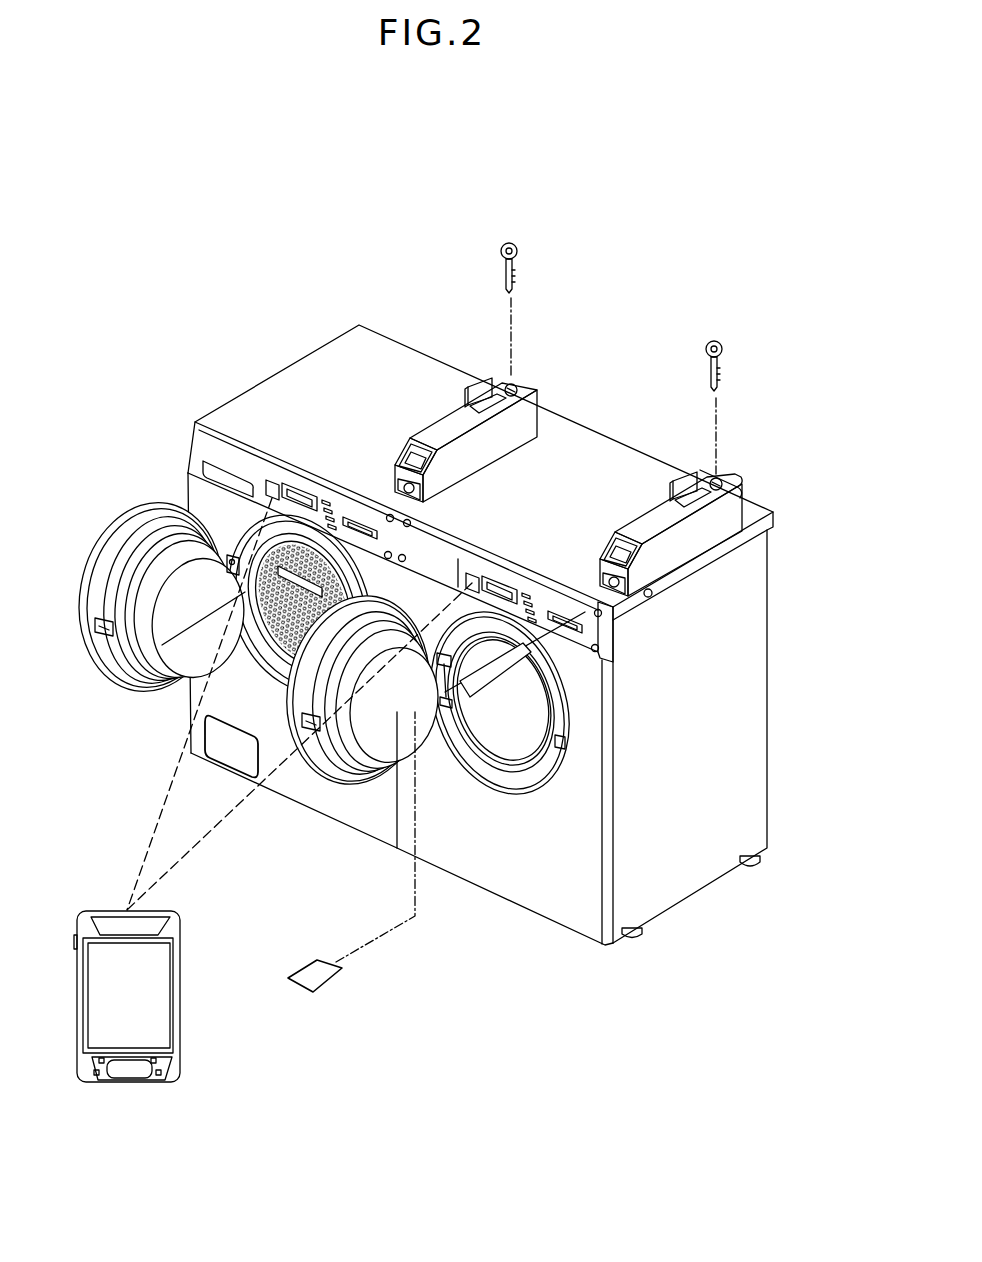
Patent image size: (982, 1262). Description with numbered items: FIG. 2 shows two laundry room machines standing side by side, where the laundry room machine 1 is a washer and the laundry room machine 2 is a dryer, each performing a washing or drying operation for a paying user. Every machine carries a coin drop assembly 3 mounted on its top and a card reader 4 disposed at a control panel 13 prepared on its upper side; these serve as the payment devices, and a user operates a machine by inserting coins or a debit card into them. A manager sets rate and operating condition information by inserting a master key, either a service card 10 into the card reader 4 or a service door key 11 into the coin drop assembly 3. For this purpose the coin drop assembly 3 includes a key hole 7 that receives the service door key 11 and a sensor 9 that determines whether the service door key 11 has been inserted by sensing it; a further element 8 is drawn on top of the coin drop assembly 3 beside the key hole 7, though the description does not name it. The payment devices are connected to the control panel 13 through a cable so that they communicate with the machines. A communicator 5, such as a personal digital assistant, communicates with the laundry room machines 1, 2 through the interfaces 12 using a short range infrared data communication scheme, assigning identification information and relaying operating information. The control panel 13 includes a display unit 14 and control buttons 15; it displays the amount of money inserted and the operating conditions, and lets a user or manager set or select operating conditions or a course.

The laundry room machine 1 is at (351, 809).
The laundry room machine 2 is at (504, 876).
The coin drop assembly 3 is at (447, 430).
The card reader 4 is at (354, 516).
The communicator 5 is at (85, 1067).
The key hole 7 is at (718, 480).
The display plate 8 is at (684, 484).
The sensor 9 is at (728, 497).
The service card 10 is at (302, 979).
The service door key 11 is at (510, 243).
The interface 12 is at (265, 486).
The control panel 13 is at (268, 479).
The display unit 14 is at (297, 481).
The control buttons 15 is at (323, 498).